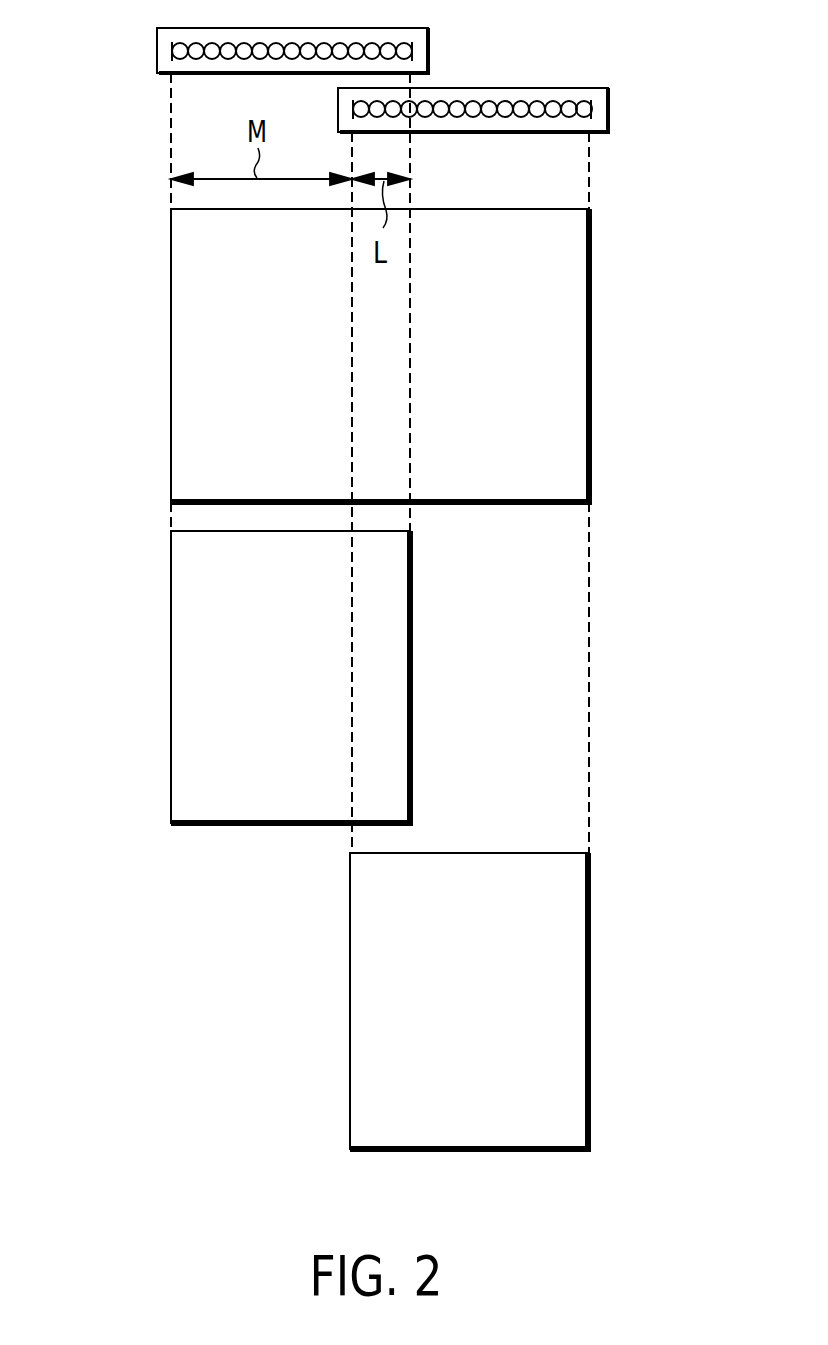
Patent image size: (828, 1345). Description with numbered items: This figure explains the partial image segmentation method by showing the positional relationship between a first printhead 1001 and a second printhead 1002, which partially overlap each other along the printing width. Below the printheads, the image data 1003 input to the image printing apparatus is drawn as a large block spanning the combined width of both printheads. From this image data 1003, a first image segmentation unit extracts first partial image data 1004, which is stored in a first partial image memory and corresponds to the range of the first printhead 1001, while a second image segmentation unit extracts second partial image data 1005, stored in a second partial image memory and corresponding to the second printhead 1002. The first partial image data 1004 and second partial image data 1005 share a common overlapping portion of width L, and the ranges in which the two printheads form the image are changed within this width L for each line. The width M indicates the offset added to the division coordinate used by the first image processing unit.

The first printhead 1001 is at (157, 53).
The second printhead 1002 is at (612, 106).
The image data 1003 is at (593, 251).
The first partial image data 1004 is at (169, 596).
The second partial image data 1005 is at (591, 942).